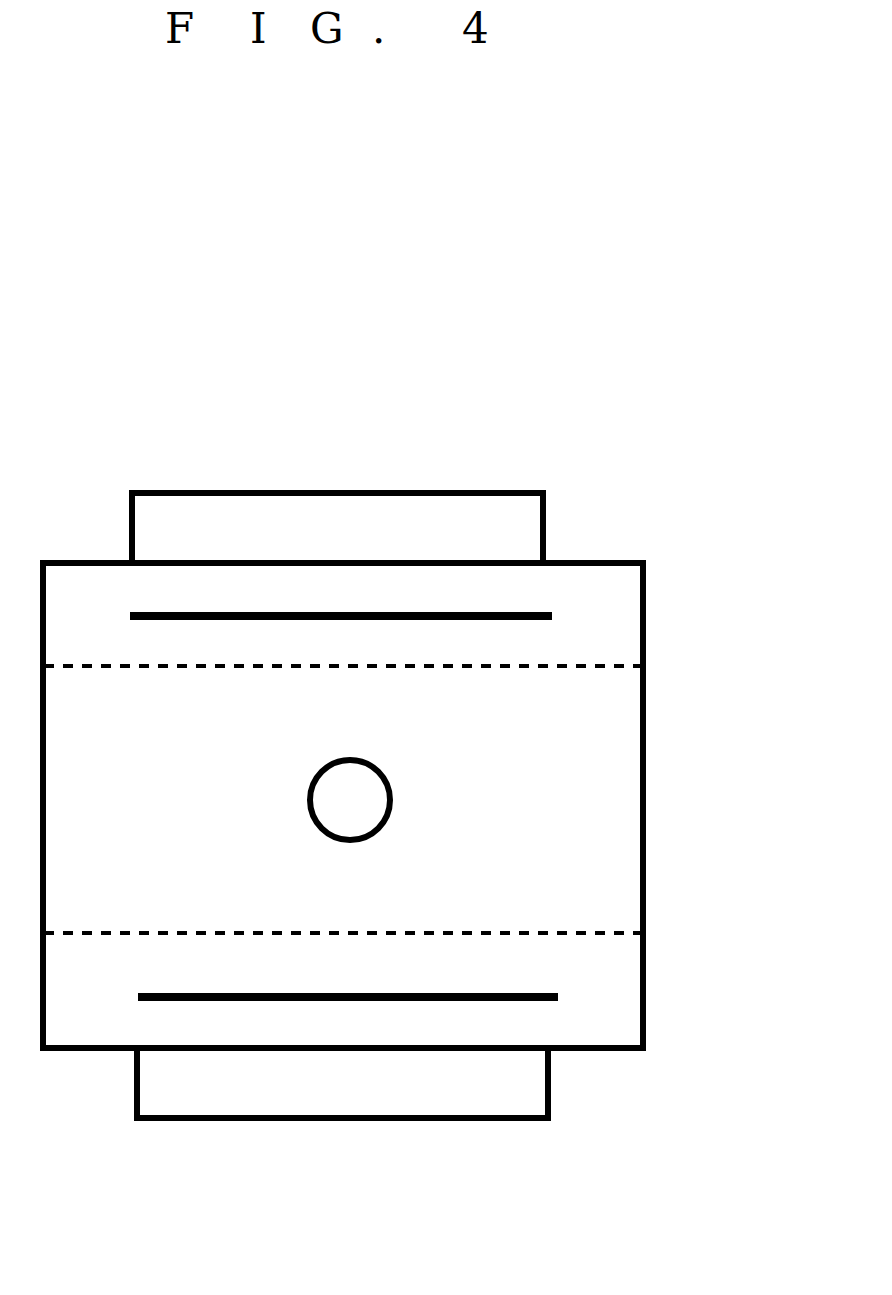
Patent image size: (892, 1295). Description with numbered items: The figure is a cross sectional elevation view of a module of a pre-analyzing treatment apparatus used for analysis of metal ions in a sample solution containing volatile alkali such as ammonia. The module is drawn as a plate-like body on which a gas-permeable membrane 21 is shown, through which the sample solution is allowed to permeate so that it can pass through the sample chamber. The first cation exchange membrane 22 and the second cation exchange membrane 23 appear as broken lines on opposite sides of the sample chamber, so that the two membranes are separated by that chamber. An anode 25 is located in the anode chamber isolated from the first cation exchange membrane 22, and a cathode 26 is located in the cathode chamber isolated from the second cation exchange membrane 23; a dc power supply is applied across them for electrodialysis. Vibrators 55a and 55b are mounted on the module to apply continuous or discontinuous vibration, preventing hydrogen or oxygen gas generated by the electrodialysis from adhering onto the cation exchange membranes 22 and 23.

The gas-permeable membrane 21 is at (397, 807).
The first cation exchange membrane 22 is at (620, 663).
The second cation exchange membrane 23 is at (607, 928).
The anode 25 is at (193, 612).
The cathode 26 is at (330, 1003).
The vibrator 55a is at (505, 516).
The vibrator 55b is at (515, 1103).